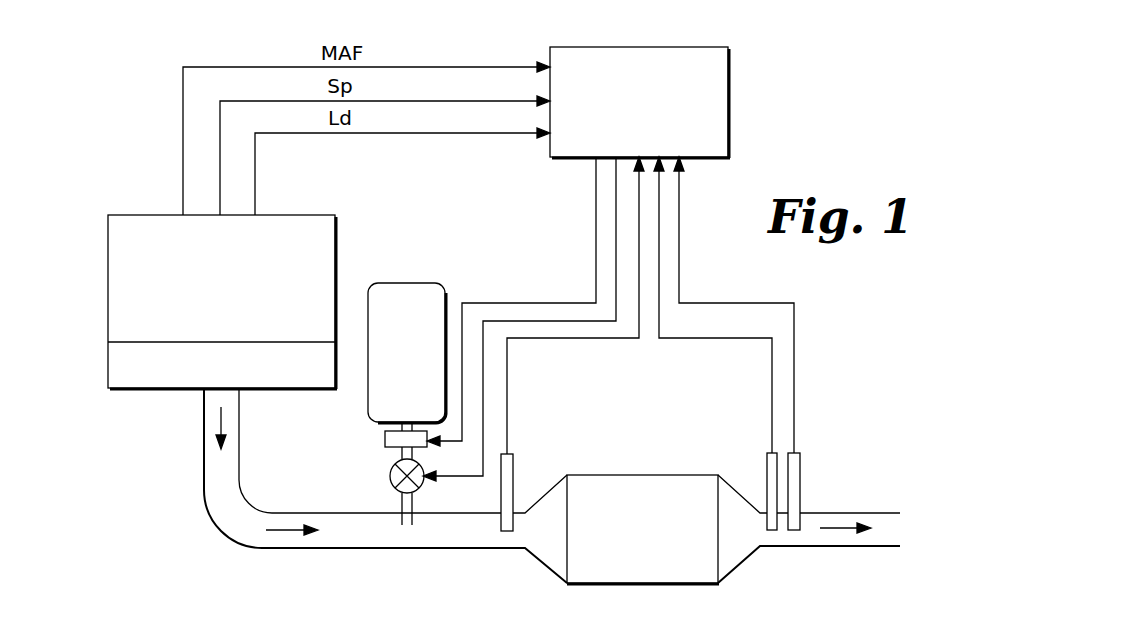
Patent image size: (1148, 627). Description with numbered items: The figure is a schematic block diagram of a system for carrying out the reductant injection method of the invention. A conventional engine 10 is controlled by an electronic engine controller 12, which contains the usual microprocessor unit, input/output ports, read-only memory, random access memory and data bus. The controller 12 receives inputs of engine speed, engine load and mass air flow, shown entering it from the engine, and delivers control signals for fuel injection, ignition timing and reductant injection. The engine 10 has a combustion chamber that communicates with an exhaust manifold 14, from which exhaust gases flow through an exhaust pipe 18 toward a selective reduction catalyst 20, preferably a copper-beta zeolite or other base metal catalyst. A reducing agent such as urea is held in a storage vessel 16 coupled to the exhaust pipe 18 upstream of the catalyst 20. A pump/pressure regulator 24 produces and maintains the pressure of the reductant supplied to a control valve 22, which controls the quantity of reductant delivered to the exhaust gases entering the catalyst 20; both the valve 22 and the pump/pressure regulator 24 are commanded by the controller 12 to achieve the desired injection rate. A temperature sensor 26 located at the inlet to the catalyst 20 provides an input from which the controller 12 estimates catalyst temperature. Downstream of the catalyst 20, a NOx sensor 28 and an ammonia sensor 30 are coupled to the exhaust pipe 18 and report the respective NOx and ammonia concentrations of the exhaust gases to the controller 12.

The engine 10 is at (338, 240).
The electronic engine controller (EEC) 12 is at (728, 80).
The exhaust manifold 14 is at (165, 392).
The storage vessel 16 is at (405, 283).
The exhaust pipe 18 is at (365, 540).
The selective reduction catalyst (SRC) 20 is at (615, 475).
The control valve 22 is at (390, 478).
The pump/pressure regulator 24 is at (382, 438).
The temperature sensor 26 is at (513, 468).
The NOx sensor 28 is at (767, 468).
The ammonia sensor 30 is at (800, 468).